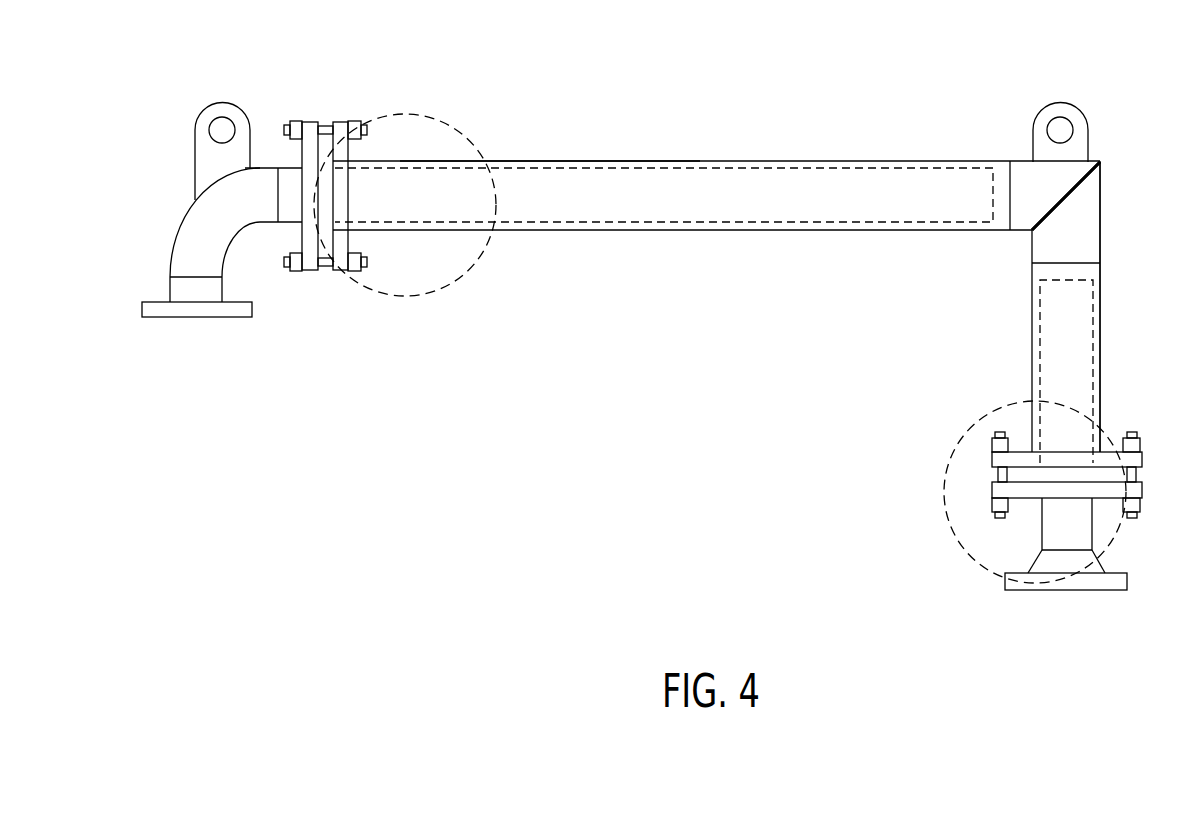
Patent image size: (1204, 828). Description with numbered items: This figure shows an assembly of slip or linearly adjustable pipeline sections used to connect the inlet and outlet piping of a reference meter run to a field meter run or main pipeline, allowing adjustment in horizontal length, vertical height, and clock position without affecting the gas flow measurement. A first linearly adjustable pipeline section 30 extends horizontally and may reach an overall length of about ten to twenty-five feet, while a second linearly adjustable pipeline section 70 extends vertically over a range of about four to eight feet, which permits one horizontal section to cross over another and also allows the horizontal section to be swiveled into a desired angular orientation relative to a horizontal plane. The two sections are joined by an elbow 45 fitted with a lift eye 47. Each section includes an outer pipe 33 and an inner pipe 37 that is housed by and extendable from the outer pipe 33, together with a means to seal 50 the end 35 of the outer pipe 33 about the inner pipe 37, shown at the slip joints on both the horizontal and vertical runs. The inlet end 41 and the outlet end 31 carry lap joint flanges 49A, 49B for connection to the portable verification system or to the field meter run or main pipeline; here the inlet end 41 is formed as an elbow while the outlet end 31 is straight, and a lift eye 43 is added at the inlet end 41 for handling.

The linearly adjustable pipeline section 30 is at (620, 146).
The outlet end 31 is at (1040, 590).
The outer pipe 33 is at (528, 160).
The end of the outer pipe 35 is at (333, 197).
The inner pipe 37 is at (580, 223).
The inlet end 41 is at (175, 318).
The lift eye 43 is at (222, 100).
The elbow 45 is at (1102, 177).
The lift eye 47 is at (1083, 112).
The lap joint flange 49A is at (227, 318).
The lap joint flange 49B is at (1073, 590).
The means to seal 50 is at (320, 100).
The linearly adjustable pipeline section 70 is at (1138, 335).